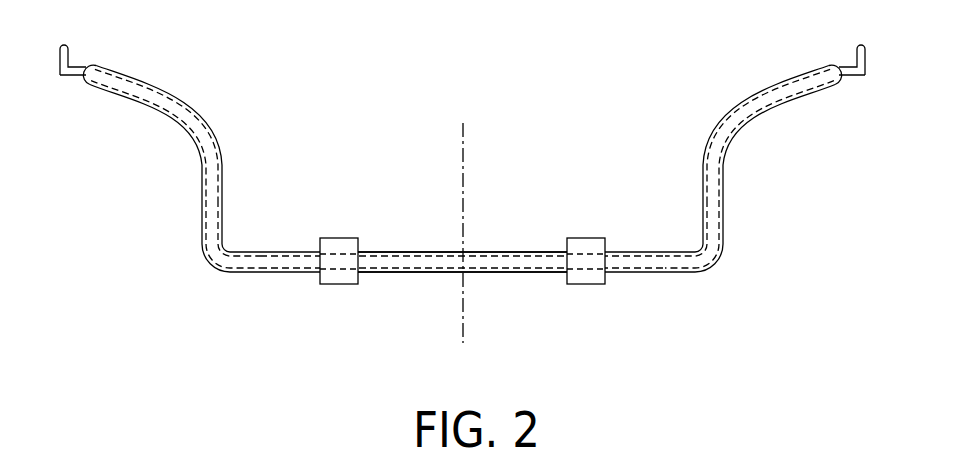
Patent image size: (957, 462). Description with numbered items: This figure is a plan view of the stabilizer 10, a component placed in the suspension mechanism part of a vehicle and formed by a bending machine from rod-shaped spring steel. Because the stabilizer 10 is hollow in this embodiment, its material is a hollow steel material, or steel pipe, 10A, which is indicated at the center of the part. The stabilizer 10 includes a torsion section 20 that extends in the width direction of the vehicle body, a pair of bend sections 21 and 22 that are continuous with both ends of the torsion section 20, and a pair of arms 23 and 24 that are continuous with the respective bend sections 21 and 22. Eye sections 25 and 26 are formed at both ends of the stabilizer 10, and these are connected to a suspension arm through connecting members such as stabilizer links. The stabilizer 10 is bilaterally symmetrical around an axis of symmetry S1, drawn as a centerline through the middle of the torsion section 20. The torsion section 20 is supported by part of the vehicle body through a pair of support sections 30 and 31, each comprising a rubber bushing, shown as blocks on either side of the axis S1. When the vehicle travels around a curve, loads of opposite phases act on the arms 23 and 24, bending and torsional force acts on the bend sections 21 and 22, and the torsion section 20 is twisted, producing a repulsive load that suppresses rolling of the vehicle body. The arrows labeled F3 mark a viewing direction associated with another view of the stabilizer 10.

The stabilizer 10 is at (462, 208).
The hollow steel material (steel pipe) 10A is at (421, 259).
The torsion section 20 is at (462, 261).
The bend section 21 is at (205, 257).
The bend section 22 is at (720, 259).
The arm 23 is at (178, 97).
The arm 24 is at (748, 97).
The eye section 25 is at (68, 58).
The eye section 26 is at (857, 58).
The support section 30 is at (339, 238).
The support section 31 is at (587, 238).
The axis of symmetry S1 is at (464, 138).
The viewing direction of FIG. 3 F3 is at (245, 240).